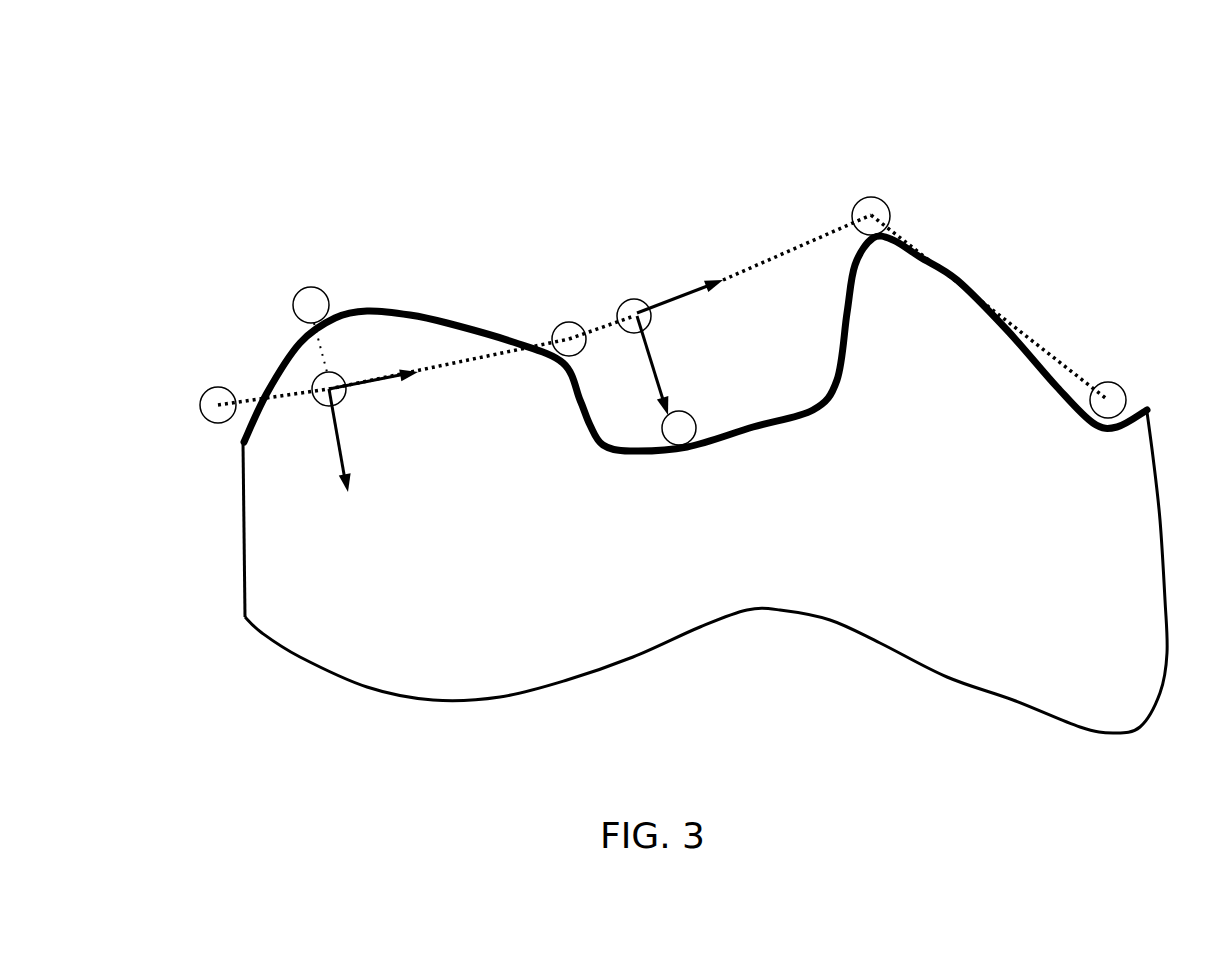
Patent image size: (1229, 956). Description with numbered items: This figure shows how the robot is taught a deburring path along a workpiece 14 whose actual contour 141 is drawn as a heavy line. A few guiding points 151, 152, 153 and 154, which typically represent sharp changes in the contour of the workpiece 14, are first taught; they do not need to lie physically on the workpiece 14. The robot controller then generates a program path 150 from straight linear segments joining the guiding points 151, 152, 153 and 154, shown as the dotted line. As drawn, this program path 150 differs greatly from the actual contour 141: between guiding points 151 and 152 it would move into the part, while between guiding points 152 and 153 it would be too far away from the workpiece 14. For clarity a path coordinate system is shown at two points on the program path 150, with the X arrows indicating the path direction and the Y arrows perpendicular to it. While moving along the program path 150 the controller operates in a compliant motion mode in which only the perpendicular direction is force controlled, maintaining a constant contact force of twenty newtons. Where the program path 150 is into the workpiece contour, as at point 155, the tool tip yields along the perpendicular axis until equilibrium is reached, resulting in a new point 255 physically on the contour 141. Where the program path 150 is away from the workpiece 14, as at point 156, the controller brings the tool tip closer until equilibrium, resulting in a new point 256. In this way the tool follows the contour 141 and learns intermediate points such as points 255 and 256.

The workpiece 14 is at (893, 590).
The actual contour 141 is at (997, 313).
The program path 150 is at (760, 253).
The guiding point 151 is at (213, 395).
The guiding point 152 is at (570, 330).
The guiding point 153 is at (866, 205).
The guiding point 154 is at (1117, 393).
The point 155 is at (322, 395).
The point 156 is at (638, 313).
The new point 255 is at (322, 295).
The new point 256 is at (678, 428).